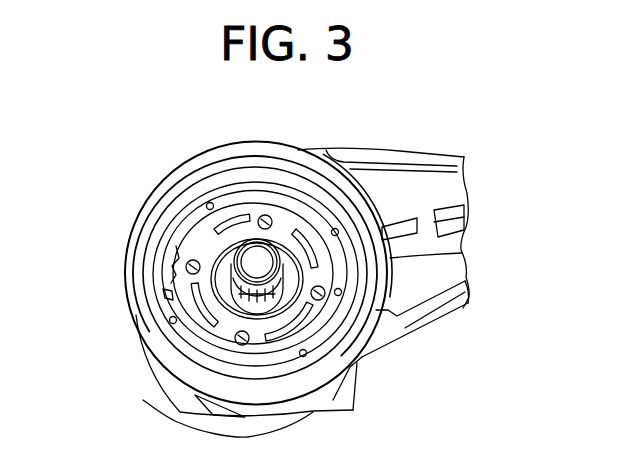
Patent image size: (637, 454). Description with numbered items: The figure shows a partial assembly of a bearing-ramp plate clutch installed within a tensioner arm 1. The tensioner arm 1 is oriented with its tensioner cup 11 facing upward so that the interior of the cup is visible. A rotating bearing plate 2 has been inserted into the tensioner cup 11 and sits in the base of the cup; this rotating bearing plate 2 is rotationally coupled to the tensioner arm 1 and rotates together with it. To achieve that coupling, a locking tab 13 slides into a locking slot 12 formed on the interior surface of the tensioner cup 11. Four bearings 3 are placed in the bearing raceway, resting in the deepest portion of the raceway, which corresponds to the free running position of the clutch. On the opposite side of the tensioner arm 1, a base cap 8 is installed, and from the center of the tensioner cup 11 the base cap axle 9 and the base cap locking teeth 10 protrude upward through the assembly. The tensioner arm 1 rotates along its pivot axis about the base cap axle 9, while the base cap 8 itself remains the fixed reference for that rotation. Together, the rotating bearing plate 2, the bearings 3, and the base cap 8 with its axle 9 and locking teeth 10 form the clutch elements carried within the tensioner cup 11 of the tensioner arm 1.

The tensioner arm 1 is at (390, 128).
The rotating bearing plate 2 is at (232, 296).
The bearings 3 is at (265, 216).
The base cap 8 is at (143, 400).
The base cap axle 9 is at (213, 170).
The base cap locking teeth 10 is at (185, 279).
The tensioner cup 11 is at (238, 172).
The locking slot 12 is at (342, 289).
The locking tab 13 is at (400, 341).